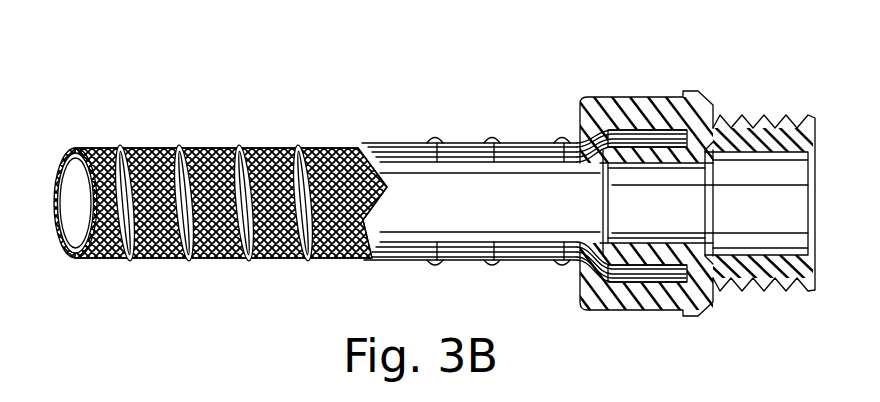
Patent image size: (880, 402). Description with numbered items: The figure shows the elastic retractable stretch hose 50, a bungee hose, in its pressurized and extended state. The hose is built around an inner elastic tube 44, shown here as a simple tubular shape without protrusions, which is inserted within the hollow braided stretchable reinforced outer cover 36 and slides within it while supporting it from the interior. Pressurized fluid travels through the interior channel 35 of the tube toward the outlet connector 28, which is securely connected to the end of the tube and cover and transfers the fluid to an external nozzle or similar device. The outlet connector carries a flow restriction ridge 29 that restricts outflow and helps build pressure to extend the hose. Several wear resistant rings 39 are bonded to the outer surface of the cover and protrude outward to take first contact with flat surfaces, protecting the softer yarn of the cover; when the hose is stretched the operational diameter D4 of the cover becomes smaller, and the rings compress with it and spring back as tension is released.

The outlet connector 28 is at (758, 293).
The flow restriction ridge 29 is at (570, 222).
The interior channel 35 is at (480, 236).
The stretchable reinforced outer cover 36 is at (73, 150).
The wear resistant rings 39 is at (242, 145).
The inner elastic tube 44 is at (57, 167).
The elastic retractable stretch hose 50 is at (473, 120).
The operational diameter D4 is at (162, 270).